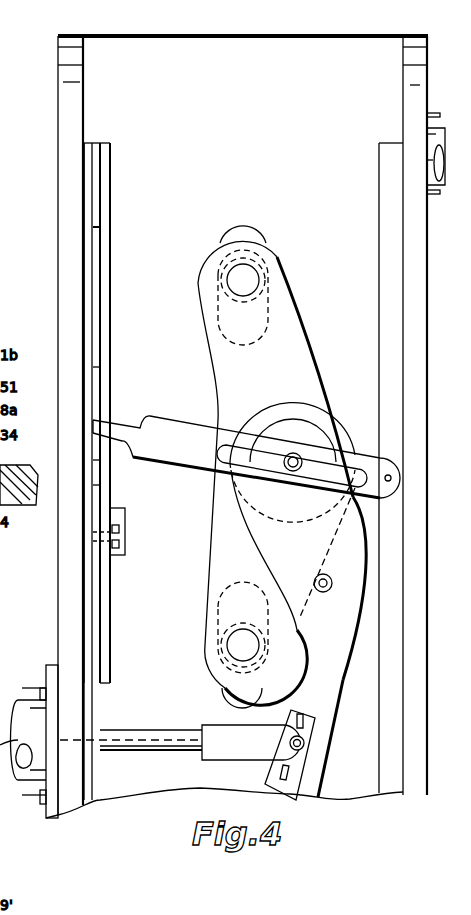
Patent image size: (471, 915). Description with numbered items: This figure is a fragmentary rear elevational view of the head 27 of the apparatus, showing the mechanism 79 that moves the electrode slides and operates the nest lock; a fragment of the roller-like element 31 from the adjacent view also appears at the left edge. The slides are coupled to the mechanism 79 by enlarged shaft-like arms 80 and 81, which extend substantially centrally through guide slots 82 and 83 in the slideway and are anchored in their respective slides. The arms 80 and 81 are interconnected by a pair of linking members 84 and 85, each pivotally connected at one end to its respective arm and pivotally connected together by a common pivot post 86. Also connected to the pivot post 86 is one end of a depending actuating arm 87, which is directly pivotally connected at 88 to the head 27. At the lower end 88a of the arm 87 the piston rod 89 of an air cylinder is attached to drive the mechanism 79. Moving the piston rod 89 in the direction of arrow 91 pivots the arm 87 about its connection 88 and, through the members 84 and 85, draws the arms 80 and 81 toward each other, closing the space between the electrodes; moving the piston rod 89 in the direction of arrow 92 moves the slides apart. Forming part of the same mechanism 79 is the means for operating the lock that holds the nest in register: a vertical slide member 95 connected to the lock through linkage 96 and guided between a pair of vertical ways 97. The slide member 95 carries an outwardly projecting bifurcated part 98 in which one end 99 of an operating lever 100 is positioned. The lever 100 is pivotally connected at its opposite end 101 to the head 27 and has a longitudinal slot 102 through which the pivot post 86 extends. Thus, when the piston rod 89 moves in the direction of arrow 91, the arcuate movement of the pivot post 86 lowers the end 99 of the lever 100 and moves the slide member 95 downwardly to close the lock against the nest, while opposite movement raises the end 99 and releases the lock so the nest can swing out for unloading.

The head 27 is at (52, 50).
The roller assembly 31 is at (24, 480).
The mechanism 79 is at (345, 692).
The shaft-like arm 80 is at (248, 275).
The shaft-like arm 81 is at (233, 638).
The guide slot 82 is at (258, 217).
The guide slot 83 is at (233, 698).
The linking member 84 is at (300, 340).
The linking member 85 is at (235, 522).
The pivot post 86 is at (300, 455).
The actuating arm 87 is at (345, 646).
The pivotal connection 88 is at (330, 576).
The lower end of arm 88a is at (300, 780).
The piston rod 89 is at (170, 737).
The arrow 91 is at (105, 724).
The arrow 92 is at (160, 762).
The vertical slide member 95 is at (97, 233).
The linkage 96 is at (120, 546).
The vertical ways 97 is at (105, 302).
The bifurcated part 98 is at (103, 460).
The end of operating lever 99 is at (115, 430).
The operating lever 100 is at (172, 432).
The end of operating lever 101 is at (388, 474).
The longitudinal slot 102 is at (238, 446).